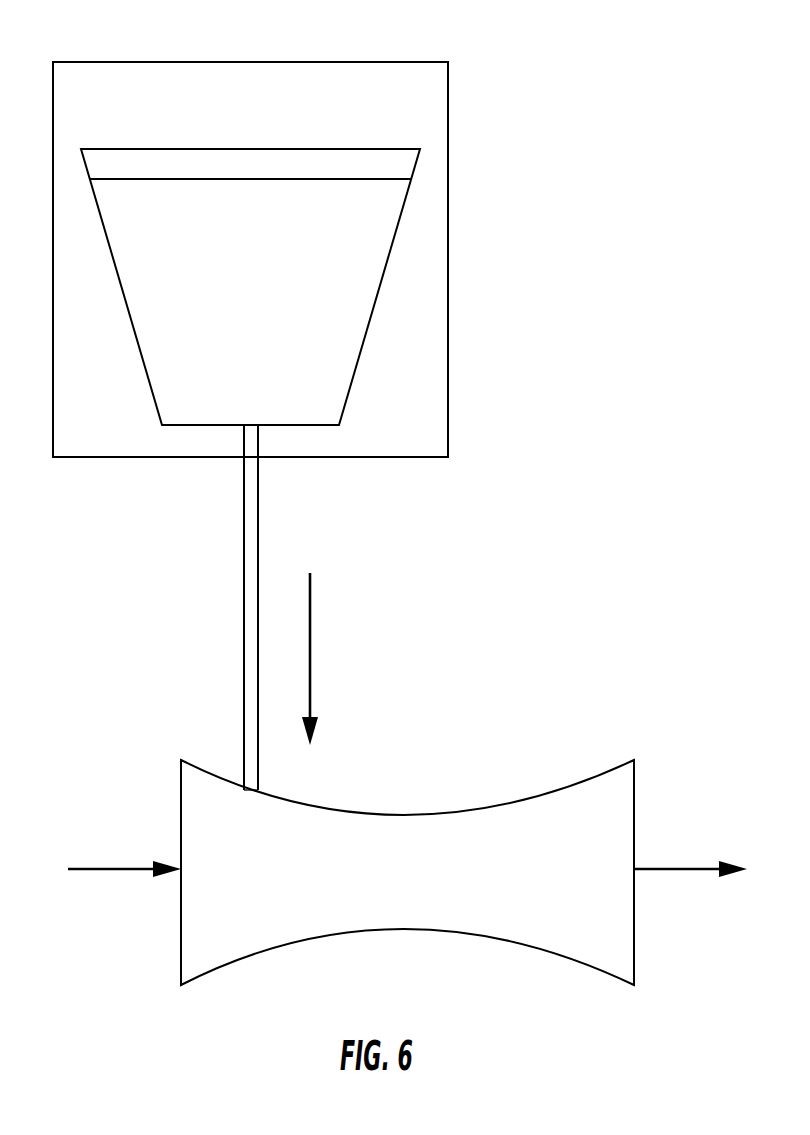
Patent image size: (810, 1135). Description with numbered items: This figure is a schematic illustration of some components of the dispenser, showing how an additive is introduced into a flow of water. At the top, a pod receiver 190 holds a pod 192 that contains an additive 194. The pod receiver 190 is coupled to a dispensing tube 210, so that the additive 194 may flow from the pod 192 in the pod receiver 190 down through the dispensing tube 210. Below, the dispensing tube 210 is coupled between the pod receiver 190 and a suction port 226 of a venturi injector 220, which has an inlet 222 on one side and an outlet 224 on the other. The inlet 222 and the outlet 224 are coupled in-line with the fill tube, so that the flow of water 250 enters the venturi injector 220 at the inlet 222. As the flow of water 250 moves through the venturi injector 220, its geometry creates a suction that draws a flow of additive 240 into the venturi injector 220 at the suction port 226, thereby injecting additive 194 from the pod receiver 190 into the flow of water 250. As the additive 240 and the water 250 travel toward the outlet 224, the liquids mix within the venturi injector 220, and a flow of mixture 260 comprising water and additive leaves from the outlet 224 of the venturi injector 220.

The pod receiver 190 is at (349, 100).
The pod 192 is at (154, 148).
The additive 194 is at (368, 237).
The dispensing tube 210 is at (252, 553).
The venturi injector 220 is at (591, 745).
The inlet 222 is at (181, 833).
The outlet 224 is at (634, 818).
The suction port 226 is at (245, 791).
The flow of additive 240 is at (312, 645).
The flow of water 250 is at (98, 872).
The flow of mixture 260 is at (663, 872).